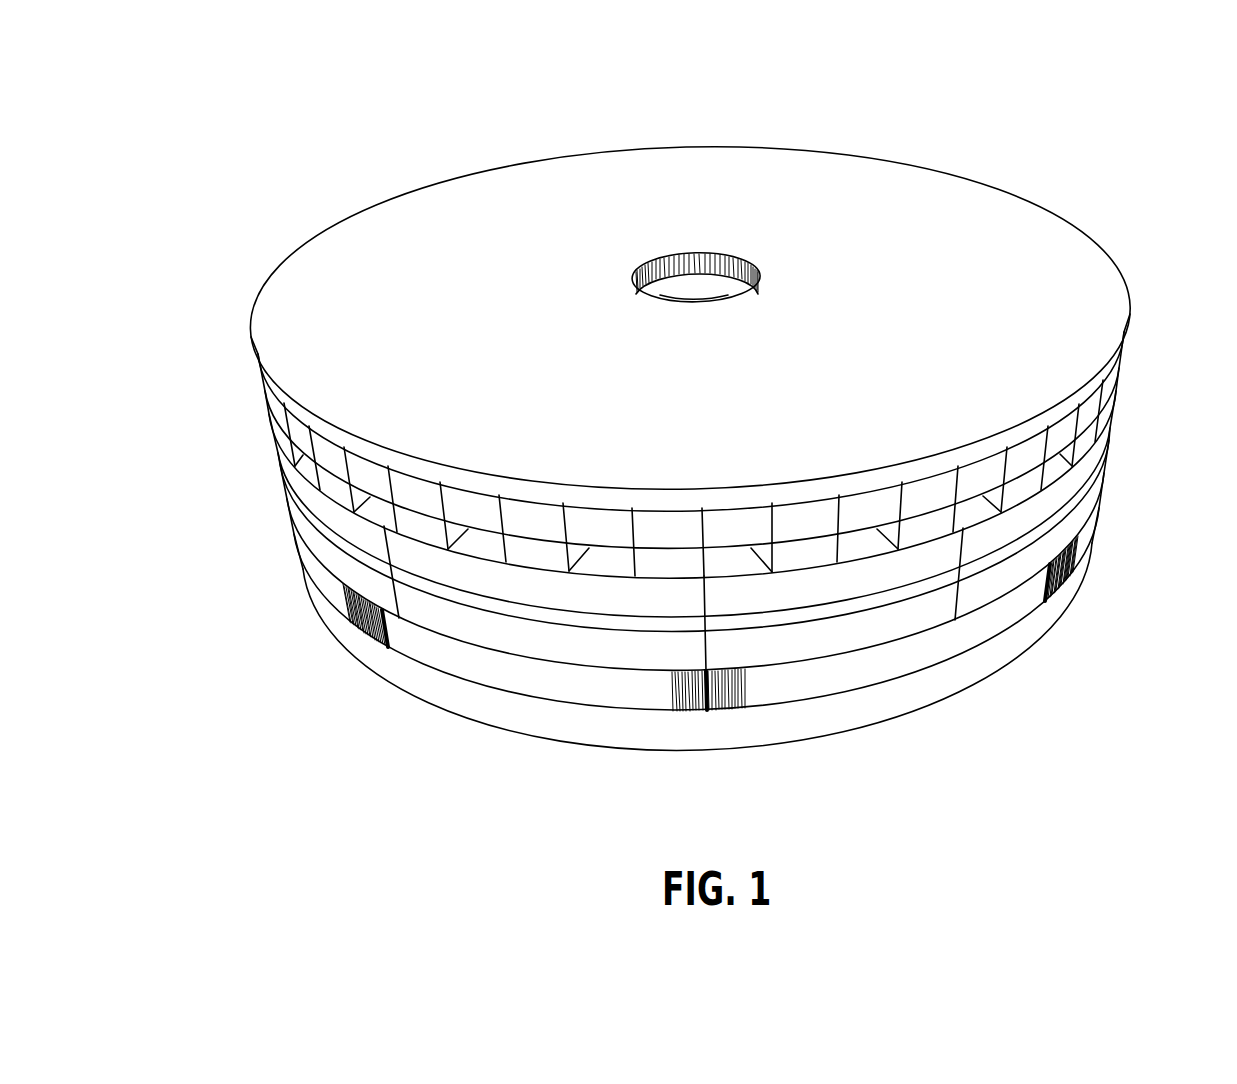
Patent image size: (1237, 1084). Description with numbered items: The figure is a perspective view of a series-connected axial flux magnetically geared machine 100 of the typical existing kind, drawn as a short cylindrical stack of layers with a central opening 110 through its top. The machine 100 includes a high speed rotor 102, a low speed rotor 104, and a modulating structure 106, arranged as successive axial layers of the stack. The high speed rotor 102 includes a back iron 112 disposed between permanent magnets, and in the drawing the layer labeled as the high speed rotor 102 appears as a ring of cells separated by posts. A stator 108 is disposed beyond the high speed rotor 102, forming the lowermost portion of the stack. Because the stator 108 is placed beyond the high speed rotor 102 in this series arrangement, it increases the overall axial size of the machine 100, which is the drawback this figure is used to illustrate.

The series-connected axial flux magnetically geared machine 100 is at (1055, 129).
The high speed rotor 102 is at (268, 425).
The low speed rotor 104 is at (1113, 378).
The modulating structure 106 is at (1093, 432).
The stator 108 is at (1035, 623).
The central opening 110 is at (696, 277).
The back iron 112 is at (1090, 485).